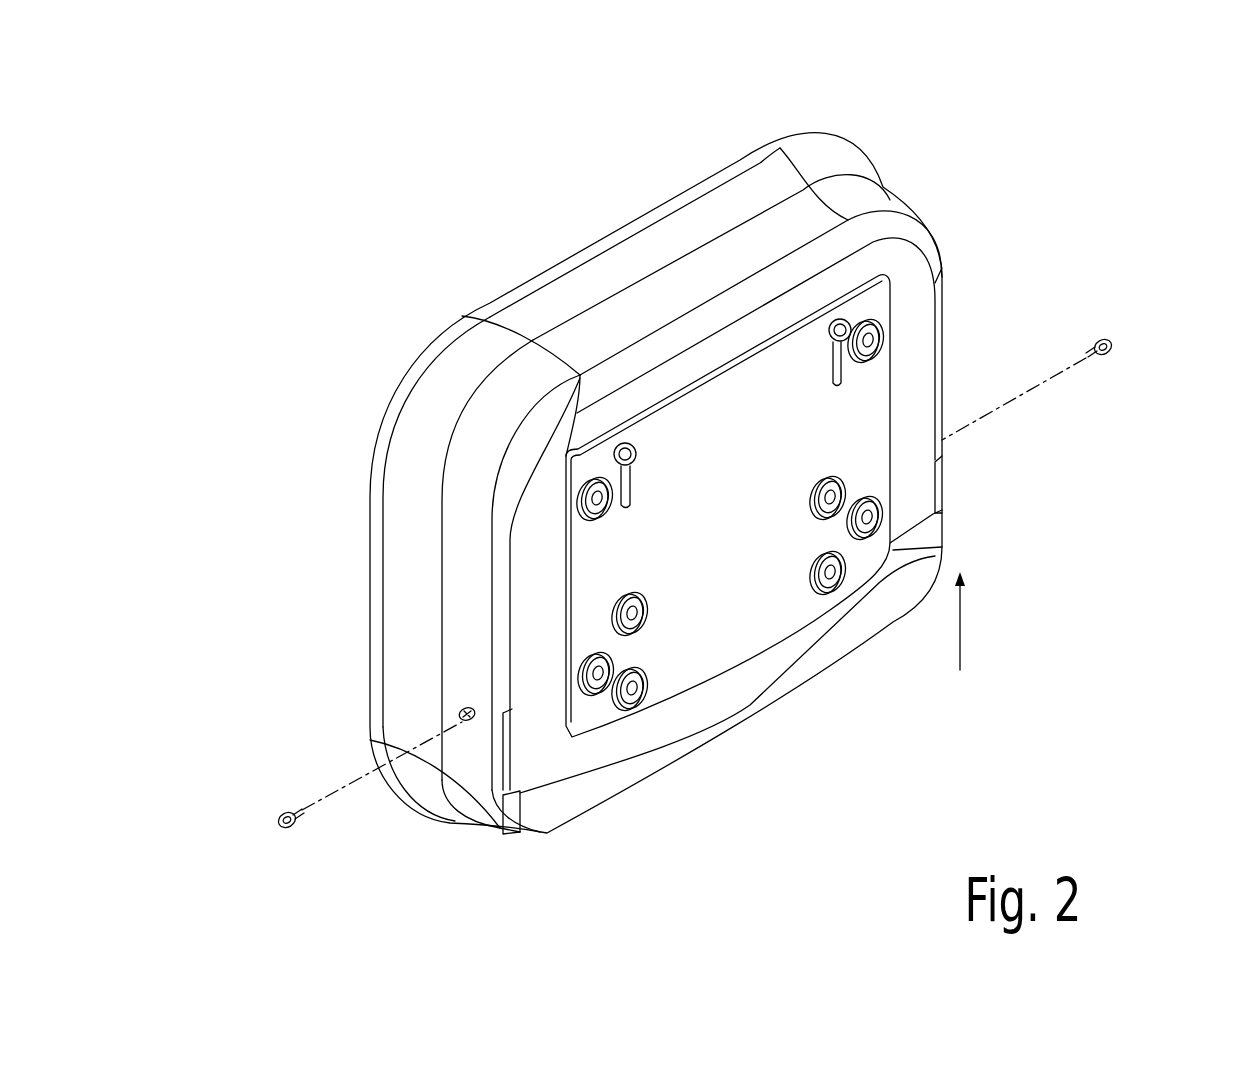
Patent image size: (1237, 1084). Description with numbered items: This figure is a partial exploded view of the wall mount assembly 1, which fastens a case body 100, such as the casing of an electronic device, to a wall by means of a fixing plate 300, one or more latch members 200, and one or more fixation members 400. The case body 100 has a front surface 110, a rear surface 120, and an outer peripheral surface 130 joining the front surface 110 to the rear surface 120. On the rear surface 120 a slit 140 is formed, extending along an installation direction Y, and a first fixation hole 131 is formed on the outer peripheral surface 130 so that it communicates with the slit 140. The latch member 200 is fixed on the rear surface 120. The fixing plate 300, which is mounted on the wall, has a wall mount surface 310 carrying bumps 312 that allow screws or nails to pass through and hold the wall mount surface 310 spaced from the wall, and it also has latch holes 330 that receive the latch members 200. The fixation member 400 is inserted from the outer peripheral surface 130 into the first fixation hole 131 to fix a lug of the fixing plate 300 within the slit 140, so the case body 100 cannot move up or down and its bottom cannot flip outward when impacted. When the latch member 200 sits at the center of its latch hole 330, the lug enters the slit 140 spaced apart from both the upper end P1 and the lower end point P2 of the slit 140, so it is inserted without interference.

The wall mount assembly 1 is at (1000, 152).
The case body 100 is at (405, 308).
The front surface 110 is at (352, 625).
The rear surface 120 is at (920, 324).
The outer peripheral surface 130 is at (448, 687).
The first fixation hole 131 is at (460, 716).
The slit 140 is at (937, 491).
The latch member 200 is at (630, 443).
The fixing plate 300 is at (597, 576).
The wall mount surface 310 is at (727, 653).
The bump 312 is at (872, 357).
The latch hole 330 is at (817, 371).
The fixation member 400 is at (1112, 347).
The upper end of the slit P1 is at (507, 705).
The lower end point of the slit P2 is at (503, 810).
The installation direction Y is at (957, 638).